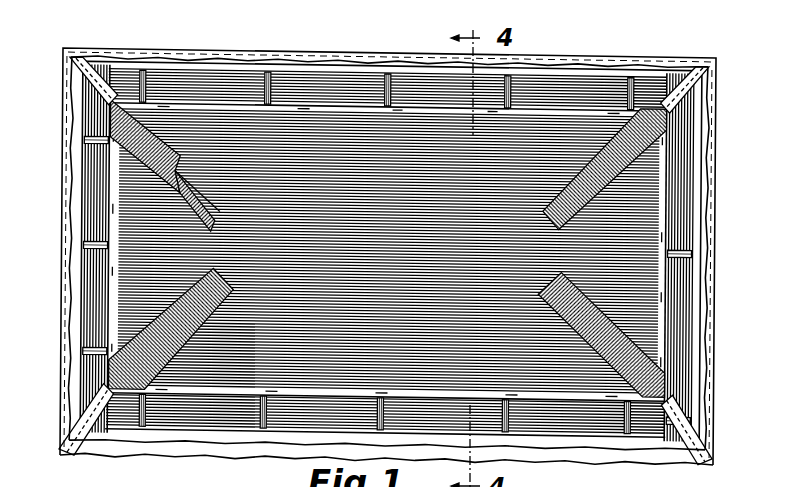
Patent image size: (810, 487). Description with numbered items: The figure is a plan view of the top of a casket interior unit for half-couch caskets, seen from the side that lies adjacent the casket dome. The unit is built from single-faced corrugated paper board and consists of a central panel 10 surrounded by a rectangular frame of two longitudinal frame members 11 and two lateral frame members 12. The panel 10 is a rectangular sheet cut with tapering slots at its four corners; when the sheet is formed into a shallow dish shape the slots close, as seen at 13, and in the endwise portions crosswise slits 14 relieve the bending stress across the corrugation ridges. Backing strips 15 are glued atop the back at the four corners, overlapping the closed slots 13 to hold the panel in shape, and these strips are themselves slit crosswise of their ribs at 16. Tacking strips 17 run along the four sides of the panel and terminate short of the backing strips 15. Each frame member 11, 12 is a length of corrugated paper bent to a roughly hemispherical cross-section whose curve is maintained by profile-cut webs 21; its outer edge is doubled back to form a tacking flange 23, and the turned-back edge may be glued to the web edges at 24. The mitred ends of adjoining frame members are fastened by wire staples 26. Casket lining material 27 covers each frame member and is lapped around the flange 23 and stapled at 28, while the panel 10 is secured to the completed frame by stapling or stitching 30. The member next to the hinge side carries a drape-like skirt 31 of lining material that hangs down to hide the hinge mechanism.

The central panel 10 is at (348, 133).
The longitudinal frame members 11 is at (594, 83).
The lateral frame members 12 is at (672, 213).
The corner slots 13 is at (176, 172).
The crosswise slits 14 is at (642, 191).
The backing strips 15 is at (638, 121).
The slits in backing strips 16 is at (669, 111).
The tacking strips 17 is at (520, 99).
The webs 21 is at (262, 68).
The tacking flange 23 is at (97, 426).
The glued turned-back edge 24 is at (562, 67).
The wire staples 26 is at (664, 101).
The casket lining material 27 is at (707, 122).
The staples 28 is at (318, 50).
The stapling or stitching 30 is at (391, 98).
The drape-like skirt 31 is at (238, 438).